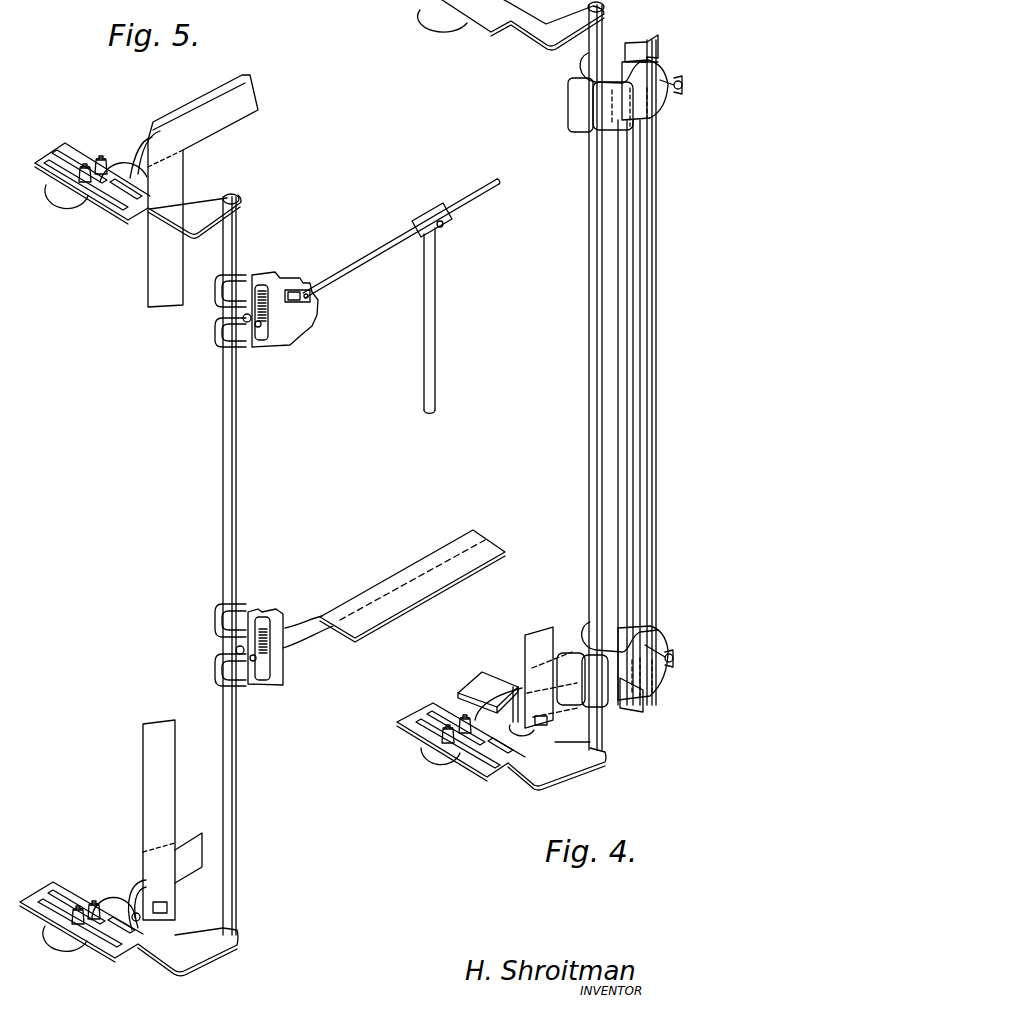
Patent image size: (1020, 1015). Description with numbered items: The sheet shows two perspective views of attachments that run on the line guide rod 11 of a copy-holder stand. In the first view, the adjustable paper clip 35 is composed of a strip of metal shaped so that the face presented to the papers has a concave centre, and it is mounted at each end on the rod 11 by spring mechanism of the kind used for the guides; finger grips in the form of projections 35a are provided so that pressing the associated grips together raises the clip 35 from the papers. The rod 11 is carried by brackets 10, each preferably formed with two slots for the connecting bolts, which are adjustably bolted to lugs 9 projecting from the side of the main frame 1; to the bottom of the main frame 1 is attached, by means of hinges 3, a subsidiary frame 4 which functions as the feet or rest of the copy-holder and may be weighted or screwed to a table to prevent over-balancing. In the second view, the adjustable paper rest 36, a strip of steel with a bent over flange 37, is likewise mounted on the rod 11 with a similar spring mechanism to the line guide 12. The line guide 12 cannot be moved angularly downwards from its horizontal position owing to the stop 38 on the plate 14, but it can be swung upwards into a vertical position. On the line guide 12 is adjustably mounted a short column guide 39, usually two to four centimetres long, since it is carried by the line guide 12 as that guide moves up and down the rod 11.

In FIG. 5, the main frame 1 is at (237, 112).
In FIG. 4, the main frame 1 is at (537, 640).
In FIG. 4, the hinges 3 is at (530, 730).
In FIG. 4, the subsidiary frame 4 is at (483, 686).
In FIG. 5, the lugs 9 is at (68, 200).
In FIG. 4, the lugs 9 is at (442, 20).
In FIG. 5, the brackets 10 is at (131, 216).
In FIG. 4, the brackets 10 is at (497, 37).
In FIG. 5, the line guide rod 11 is at (222, 478).
In FIG. 4, the line guide rod 11 is at (588, 305).
In FIG. 5, the line guide 12 is at (463, 203).
In FIG. 5, the plate 14 is at (295, 312).
In FIG. 4, the adjustable paper clip 35 is at (633, 332).
In FIG. 4, the projections 35a is at (597, 103).
In FIG. 5, the adjustable paper rest 36 is at (312, 628).
In FIG. 5, the bent over flange 37 is at (435, 573).
In FIG. 5, the stop 38 is at (302, 290).
In FIG. 5, the column guide 39 is at (413, 225).